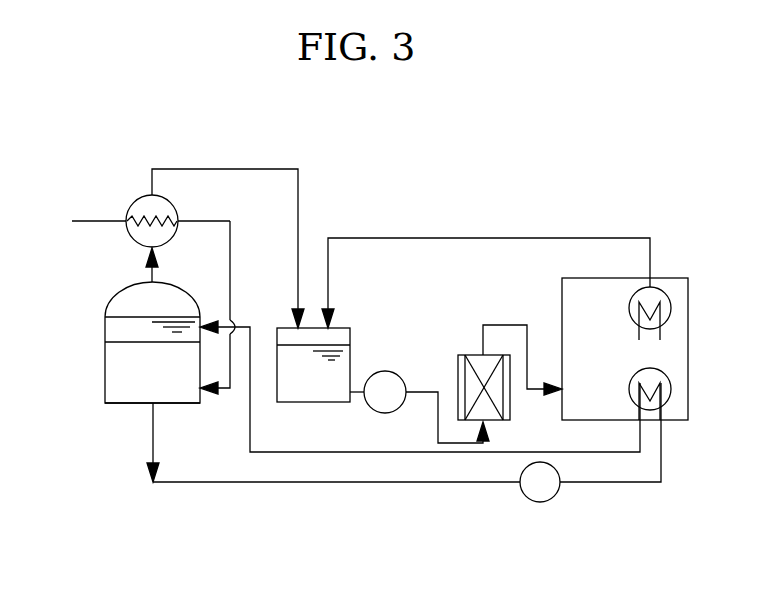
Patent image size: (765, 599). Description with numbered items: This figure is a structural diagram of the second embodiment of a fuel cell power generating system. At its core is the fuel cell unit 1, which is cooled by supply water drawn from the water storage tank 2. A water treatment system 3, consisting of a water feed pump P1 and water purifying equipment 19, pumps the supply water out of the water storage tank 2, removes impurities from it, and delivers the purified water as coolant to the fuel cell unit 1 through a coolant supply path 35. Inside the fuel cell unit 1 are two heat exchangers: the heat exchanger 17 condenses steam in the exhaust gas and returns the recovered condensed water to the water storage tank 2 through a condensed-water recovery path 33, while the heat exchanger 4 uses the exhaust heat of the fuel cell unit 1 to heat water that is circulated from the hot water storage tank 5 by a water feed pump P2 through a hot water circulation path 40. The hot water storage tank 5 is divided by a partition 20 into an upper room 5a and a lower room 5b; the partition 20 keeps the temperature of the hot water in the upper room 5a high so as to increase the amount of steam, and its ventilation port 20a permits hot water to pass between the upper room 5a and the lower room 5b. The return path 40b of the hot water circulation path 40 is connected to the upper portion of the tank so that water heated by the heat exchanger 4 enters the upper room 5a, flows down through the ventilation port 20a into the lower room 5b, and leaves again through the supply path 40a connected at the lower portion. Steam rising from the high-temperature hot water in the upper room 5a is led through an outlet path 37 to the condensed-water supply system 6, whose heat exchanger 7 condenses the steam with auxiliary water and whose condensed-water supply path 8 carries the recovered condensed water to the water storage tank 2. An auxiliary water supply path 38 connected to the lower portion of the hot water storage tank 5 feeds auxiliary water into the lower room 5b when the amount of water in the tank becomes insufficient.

The fuel cell unit 1 is at (688, 315).
The water storage tank 2 is at (340, 328).
The water treatment system 3 is at (463, 316).
The heat exchanger 4 is at (671, 392).
The hot water storage tank 5 is at (103, 387).
The upper room 5a is at (110, 328).
The lower room 5b is at (110, 362).
The condensed-water supply system 6 is at (283, 124).
The heat exchanger for recovering condensed water 7 is at (167, 196).
The condensed-water supply path 8 is at (228, 169).
The heat exchanger 17 is at (660, 287).
The water purifying equipment 19 is at (458, 367).
The partition 20 is at (140, 343).
The ventilation port 20a is at (168, 366).
The condensed-water recovery path 33 is at (498, 238).
The coolant supply path 35 is at (538, 383).
The outlet path 37 is at (147, 276).
The auxiliary water supply path 38 is at (232, 259).
The hot water circulation path 40 is at (493, 522).
The supply path 40a is at (391, 483).
The return path 40b is at (447, 455).
The water feed pump P1 is at (402, 371).
The water feed pump P2 is at (541, 502).